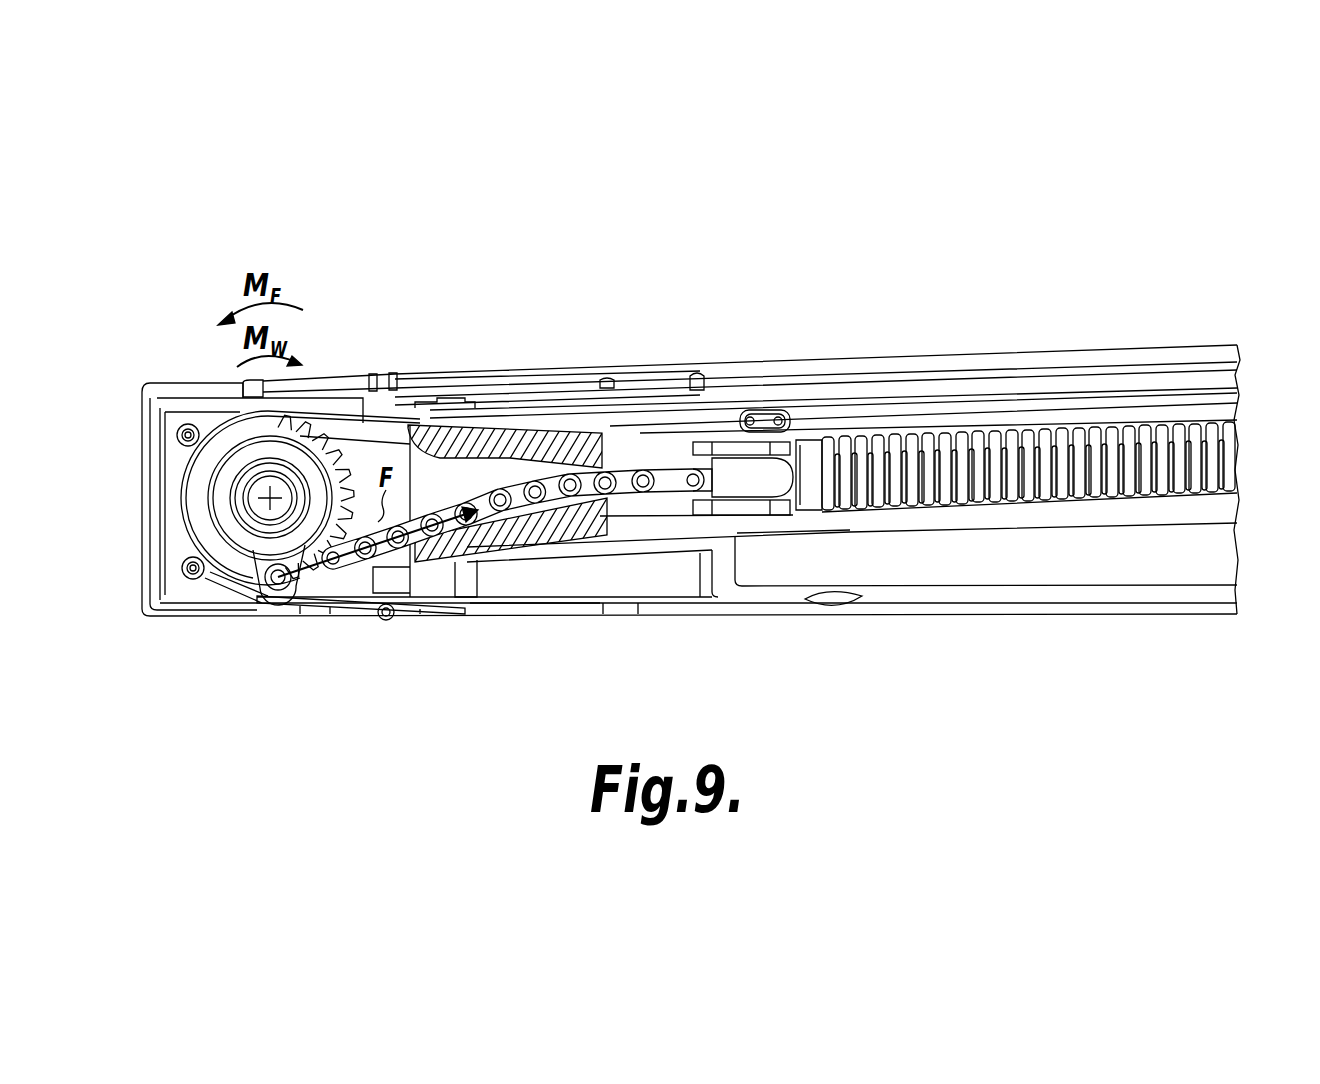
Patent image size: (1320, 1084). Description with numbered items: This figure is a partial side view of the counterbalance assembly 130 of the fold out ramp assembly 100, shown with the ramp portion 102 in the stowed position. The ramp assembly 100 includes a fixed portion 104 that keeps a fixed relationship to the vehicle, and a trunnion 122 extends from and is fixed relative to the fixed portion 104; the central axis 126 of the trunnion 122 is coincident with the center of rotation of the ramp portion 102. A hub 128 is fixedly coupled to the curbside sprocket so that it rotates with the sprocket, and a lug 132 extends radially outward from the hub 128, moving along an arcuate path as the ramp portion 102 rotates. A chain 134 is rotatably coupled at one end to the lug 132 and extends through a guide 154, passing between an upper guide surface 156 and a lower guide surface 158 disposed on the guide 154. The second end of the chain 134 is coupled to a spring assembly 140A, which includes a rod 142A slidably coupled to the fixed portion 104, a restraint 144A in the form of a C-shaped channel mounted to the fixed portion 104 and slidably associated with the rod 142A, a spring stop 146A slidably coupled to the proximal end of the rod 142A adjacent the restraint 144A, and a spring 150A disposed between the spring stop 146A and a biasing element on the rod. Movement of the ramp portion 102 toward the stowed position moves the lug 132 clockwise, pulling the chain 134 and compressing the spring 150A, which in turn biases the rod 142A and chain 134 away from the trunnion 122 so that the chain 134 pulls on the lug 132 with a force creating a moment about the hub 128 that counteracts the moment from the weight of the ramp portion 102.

The ramp assembly 100 is at (1233, 210).
The ramp portion 102 is at (1113, 347).
The fixed portion 104 is at (1158, 608).
The trunnion 122 is at (247, 515).
The central axis 126 is at (263, 480).
The hub 128 is at (218, 482).
The counterbalance assembly 130 is at (577, 622).
The lug 132 is at (240, 573).
The chain 134 is at (455, 562).
The spring assembly 140A is at (1004, 537).
The rod 142A is at (808, 448).
The restraint 144A is at (727, 447).
The spring stop 146A is at (807, 500).
The spring 150A is at (895, 440).
The guide 154 is at (597, 429).
The upper guide surface 156 is at (408, 445).
The lower guide surface 158 is at (507, 468).